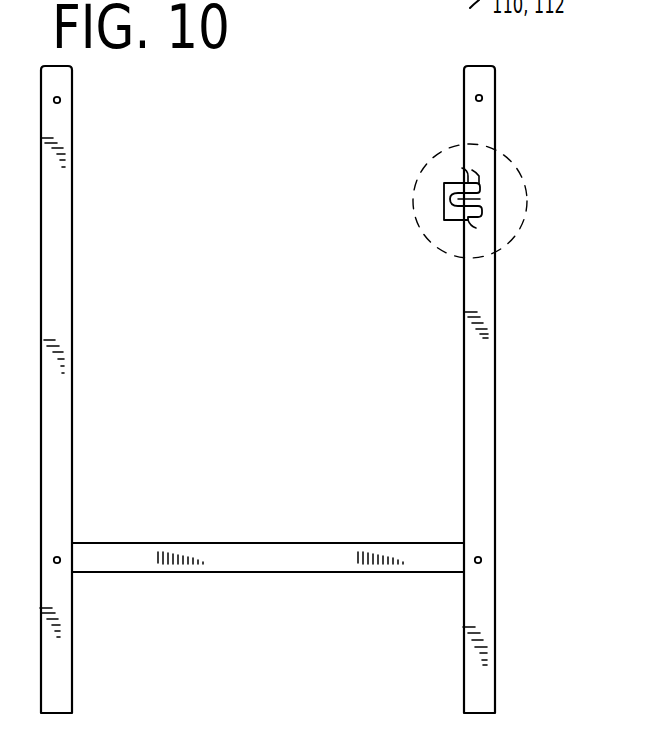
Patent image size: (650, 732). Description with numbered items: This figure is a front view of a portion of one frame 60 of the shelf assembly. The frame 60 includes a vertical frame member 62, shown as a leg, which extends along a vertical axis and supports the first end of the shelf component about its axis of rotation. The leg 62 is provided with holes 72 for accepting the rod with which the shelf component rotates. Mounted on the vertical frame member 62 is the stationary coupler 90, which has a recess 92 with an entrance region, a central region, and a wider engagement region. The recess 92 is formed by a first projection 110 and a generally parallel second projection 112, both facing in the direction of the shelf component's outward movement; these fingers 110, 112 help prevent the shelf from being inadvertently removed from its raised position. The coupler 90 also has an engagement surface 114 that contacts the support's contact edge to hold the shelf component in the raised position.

The frame 60 is at (256, 535).
The vertical frame member 62 is at (488, 385).
The holes 72 is at (484, 97).
The stationary coupler 90 is at (448, 228).
The recess 92 is at (483, 204).
The first projection 110 is at (469, 220).
The second projection 112 is at (479, 184).
The engagement surface 114 is at (466, 172).